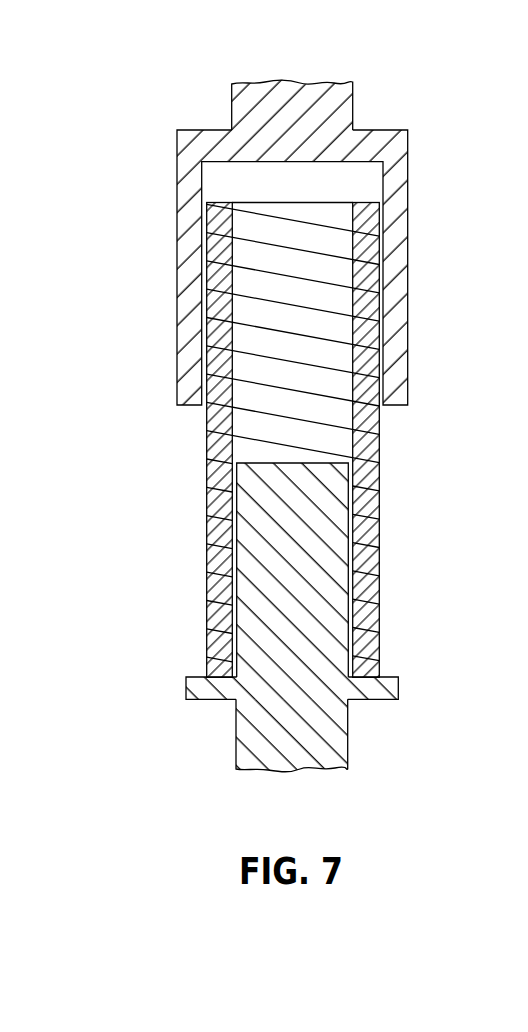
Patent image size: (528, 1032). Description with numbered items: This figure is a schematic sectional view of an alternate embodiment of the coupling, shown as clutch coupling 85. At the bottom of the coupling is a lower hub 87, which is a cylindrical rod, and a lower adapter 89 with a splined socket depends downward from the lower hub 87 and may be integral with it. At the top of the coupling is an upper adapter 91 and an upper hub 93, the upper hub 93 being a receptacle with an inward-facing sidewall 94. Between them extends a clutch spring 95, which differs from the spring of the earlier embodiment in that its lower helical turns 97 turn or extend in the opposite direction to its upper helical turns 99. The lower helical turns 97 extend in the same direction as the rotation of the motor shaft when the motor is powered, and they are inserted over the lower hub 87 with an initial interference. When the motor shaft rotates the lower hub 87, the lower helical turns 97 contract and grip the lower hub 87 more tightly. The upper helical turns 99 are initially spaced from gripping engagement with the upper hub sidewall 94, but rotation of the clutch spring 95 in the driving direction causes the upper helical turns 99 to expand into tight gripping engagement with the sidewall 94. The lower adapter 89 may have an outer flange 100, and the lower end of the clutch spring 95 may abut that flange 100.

The clutch coupling 85 is at (438, 386).
The lower hub 87 is at (327, 615).
The lower adapter 89 is at (348, 728).
The upper adapter 91 is at (231, 93).
The upper hub 93 is at (408, 258).
The inward-facing sidewall 94 is at (371, 178).
The clutch spring 95 is at (215, 455).
The lower helical turns 97 is at (217, 637).
The upper helical turns 99 is at (217, 358).
The outer flange 100 is at (400, 690).